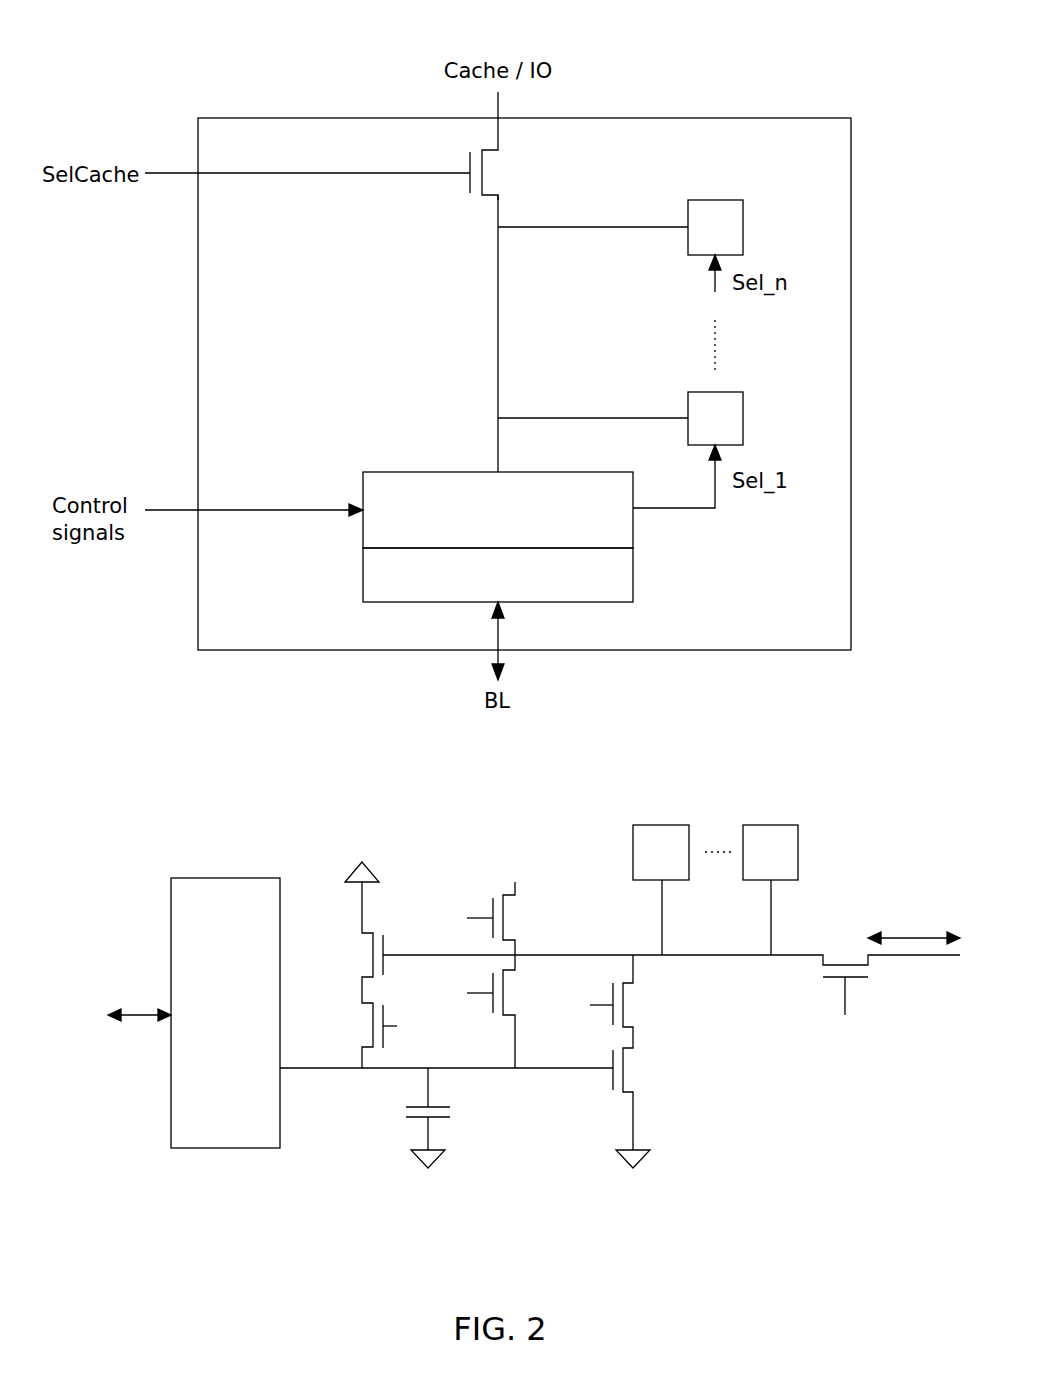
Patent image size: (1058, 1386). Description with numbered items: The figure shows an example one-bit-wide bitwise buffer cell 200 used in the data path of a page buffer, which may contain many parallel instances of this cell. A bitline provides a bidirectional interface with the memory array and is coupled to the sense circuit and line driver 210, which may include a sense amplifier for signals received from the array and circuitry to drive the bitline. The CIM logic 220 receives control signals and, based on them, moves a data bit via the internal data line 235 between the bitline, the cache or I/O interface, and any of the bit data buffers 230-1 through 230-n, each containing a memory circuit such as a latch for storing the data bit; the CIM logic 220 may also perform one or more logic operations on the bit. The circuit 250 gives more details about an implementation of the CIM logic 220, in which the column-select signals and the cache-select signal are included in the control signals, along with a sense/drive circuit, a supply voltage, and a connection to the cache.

The bitwise buffer cell 200 is at (265, 115).
The sense circuit and line driver 210 is at (498, 575).
The CIM logic 220 is at (498, 510).
The bit data buffer 230-1 is at (733, 407).
The bit data buffer 230-n is at (733, 217).
The internal data line 235 is at (503, 320).
The circuit 250 is at (238, 803).